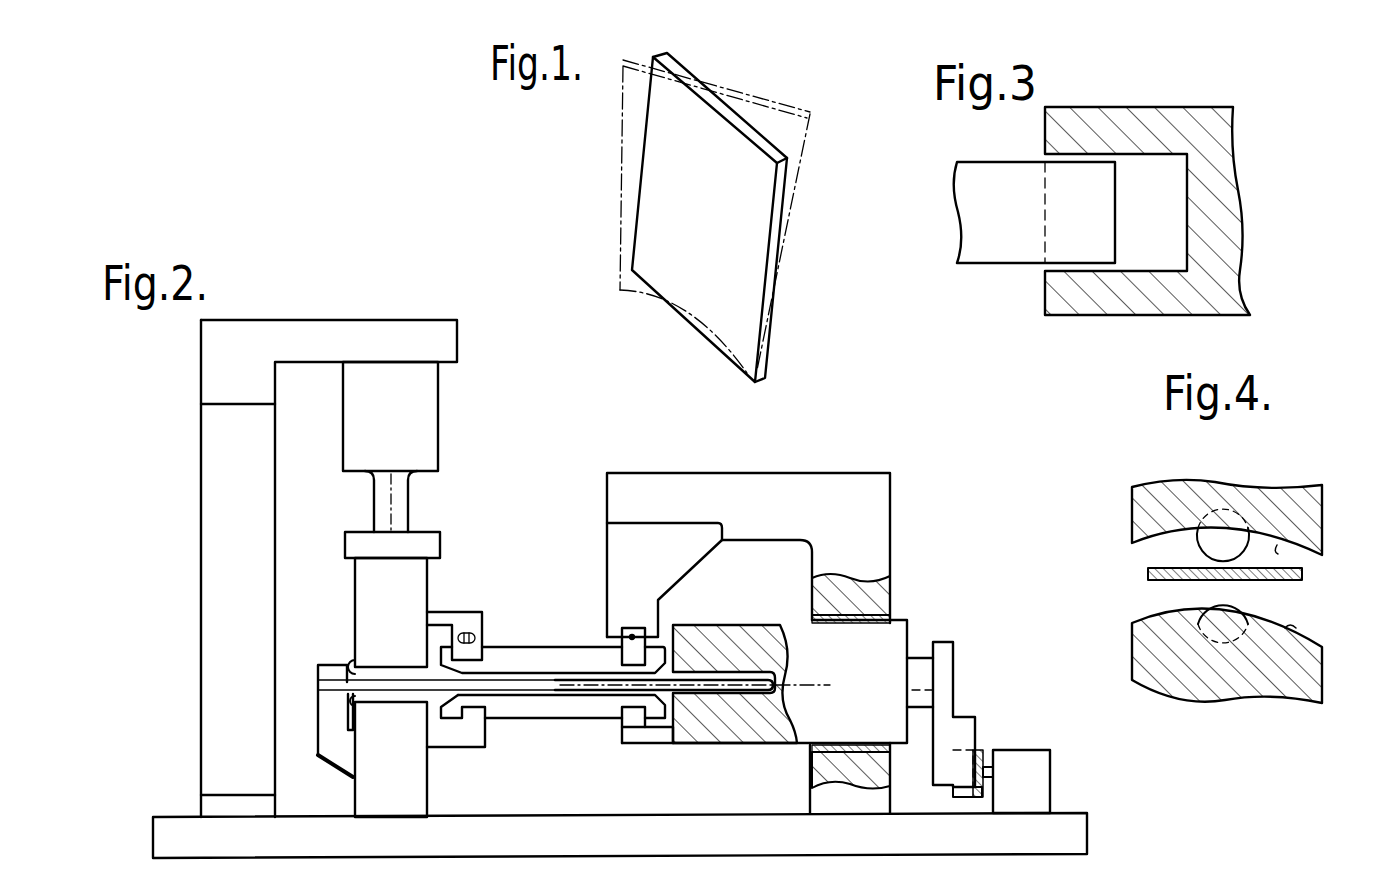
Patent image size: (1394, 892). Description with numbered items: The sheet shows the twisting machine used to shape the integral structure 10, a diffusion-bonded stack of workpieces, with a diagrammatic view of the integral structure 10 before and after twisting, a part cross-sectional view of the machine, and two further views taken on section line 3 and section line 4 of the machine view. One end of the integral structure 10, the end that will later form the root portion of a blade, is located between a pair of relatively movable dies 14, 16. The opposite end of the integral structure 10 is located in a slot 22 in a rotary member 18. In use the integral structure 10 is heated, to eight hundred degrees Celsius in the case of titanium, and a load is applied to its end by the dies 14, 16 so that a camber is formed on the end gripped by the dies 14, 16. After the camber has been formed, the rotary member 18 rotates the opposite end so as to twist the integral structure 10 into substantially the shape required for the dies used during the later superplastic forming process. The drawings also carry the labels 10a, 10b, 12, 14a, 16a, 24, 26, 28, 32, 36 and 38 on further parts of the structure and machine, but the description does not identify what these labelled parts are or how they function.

In FIG. 2, the section line 3— 3 is at (572, 670).
In FIG. 2, the section line 4— 4 is at (377, 612).
In FIG. 1, the integral structure 10 is at (709, 218).
In FIG. 3, the integral structure 10 is at (1008, 221).
In FIG. 4, the integral structure 10 is at (1305, 573).
In FIG. 2, the integral structure 10 is at (574, 685).
In FIG. 1, the plate edge 10a is at (695, 308).
In FIG. 1, the flat plate outline 10b is at (630, 189).
In FIG. 2, the machine frame 12 is at (185, 811).
In FIG. 4, the die 14 is at (1153, 653).
In FIG. 2, the die 14 is at (428, 786).
In FIG. 4, the lower jaw surface 14a is at (1290, 627).
In FIG. 2, the lower jaw surface 14a is at (360, 697).
In FIG. 4, the die 16 is at (1150, 497).
In FIG. 2, the die 16 is at (355, 578).
In FIG. 4, the upper jaw surface 16a is at (1275, 550).
In FIG. 2, the upper jaw surface 16a is at (350, 673).
In FIG. 3, the rotary member 18 is at (1193, 113).
In FIG. 2, the rotary member 18 is at (895, 633).
In FIG. 3, the slot 22 is at (1160, 221).
In FIG. 2, the slot 22 is at (775, 623).
In FIG. 2, the plate 24 is at (953, 653).
In FIG. 2, the adjusting screw 26 is at (982, 750).
In FIG. 2, the drive 28 is at (1050, 785).
In FIG. 2, the stop 32 is at (330, 717).
In FIG. 4, the lower ball 36 is at (1207, 602).
In FIG. 2, the lower ball 36 is at (578, 710).
In FIG. 4, the upper ball 38 is at (1203, 550).
In FIG. 2, the upper ball 38 is at (520, 655).